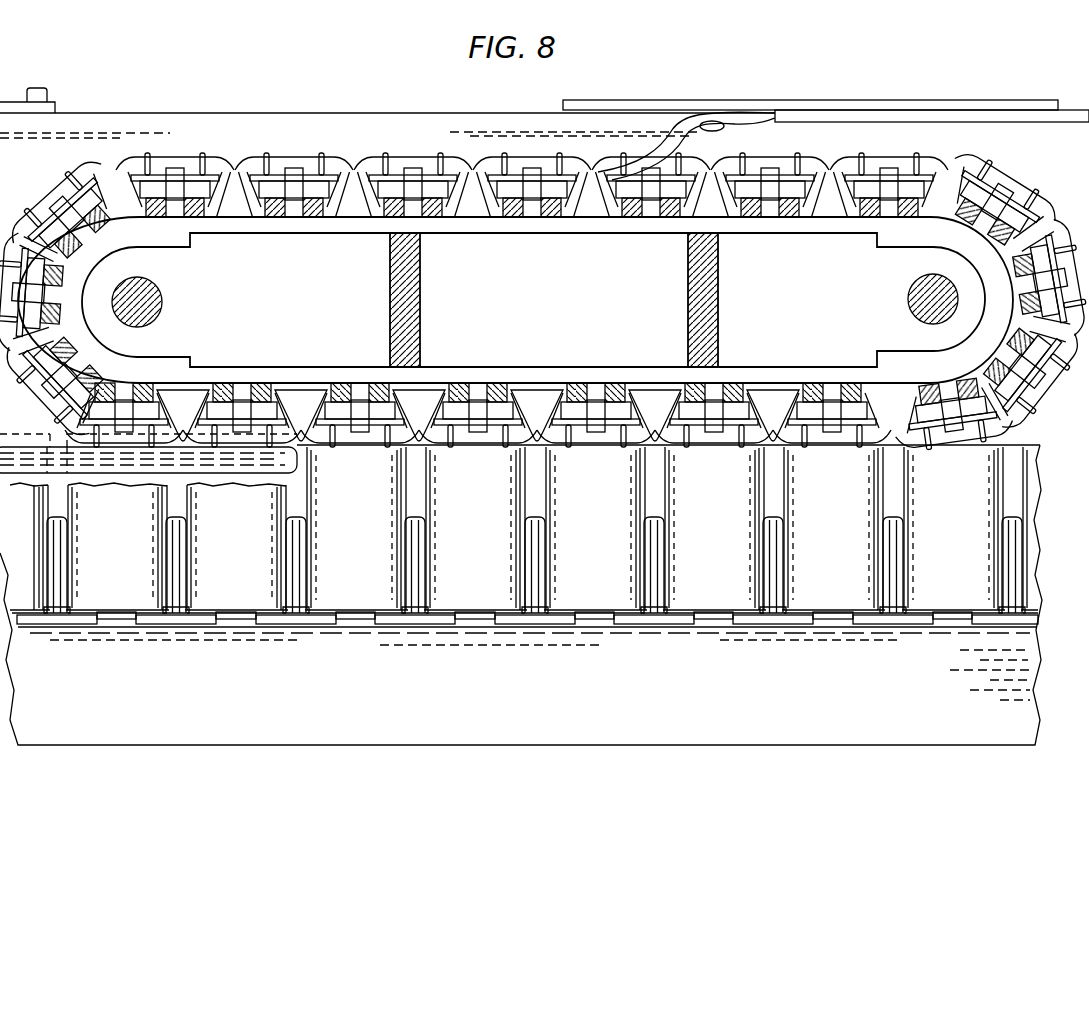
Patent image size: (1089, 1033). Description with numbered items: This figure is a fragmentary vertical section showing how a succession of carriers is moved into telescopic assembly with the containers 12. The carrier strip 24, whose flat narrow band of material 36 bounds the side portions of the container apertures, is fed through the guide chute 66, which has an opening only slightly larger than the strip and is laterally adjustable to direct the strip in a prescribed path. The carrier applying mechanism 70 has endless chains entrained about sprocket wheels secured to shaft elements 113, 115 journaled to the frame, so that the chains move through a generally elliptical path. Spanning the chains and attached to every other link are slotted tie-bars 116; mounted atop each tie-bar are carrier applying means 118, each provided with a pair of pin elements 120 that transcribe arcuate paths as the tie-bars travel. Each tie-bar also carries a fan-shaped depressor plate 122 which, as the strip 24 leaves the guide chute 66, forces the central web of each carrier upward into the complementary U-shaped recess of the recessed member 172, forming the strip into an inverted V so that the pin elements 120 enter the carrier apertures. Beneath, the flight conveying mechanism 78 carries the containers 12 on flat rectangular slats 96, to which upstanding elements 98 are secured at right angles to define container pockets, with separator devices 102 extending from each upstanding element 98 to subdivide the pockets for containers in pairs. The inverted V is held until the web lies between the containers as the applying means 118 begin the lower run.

The container 12 is at (455, 598).
The carrier strip 24 is at (684, 128).
The flat narrow band of material 36 is at (390, 434).
The guide chute 66 is at (866, 110).
The carrier applying mechanism 70 is at (166, 105).
The flight conveying mechanism 78 is at (234, 729).
The slat 96 is at (640, 619).
The upstanding element 98 is at (656, 549).
The separator device 102 is at (648, 536).
The shaft element 113 is at (158, 300).
The shaft element 115 is at (910, 303).
The tie-bar 116 is at (437, 213).
The carrier applying means 118 is at (233, 202).
The pin element 120 is at (434, 165).
The depressor plate 122 is at (1040, 192).
The recessed member 172 is at (290, 121).